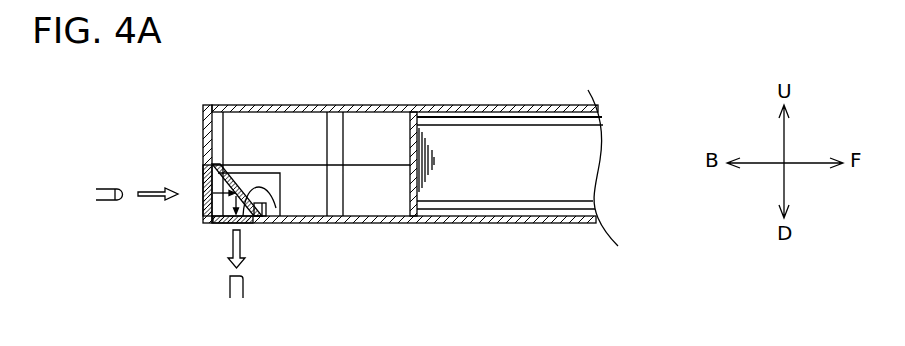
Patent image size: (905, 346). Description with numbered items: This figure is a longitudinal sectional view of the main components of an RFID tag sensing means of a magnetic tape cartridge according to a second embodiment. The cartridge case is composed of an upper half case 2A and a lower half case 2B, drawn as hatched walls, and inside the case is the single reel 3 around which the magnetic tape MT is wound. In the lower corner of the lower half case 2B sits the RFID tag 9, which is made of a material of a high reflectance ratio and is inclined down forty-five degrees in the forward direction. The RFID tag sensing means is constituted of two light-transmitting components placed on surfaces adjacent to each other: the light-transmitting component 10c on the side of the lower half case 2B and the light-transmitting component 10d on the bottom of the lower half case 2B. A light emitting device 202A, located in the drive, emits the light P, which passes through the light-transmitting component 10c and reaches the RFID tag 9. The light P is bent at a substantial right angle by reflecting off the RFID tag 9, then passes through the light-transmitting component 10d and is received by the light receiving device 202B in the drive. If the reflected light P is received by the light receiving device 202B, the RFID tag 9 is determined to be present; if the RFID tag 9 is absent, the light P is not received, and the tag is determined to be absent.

The upper half case 2A is at (525, 106).
The lower half case 2B is at (545, 224).
The single reel 3 is at (468, 123).
The magnetic tape MT is at (593, 137).
The RFID tag 9 is at (276, 208).
The light-transmitting component 10c is at (198, 195).
The light-transmitting component 10d is at (227, 223).
The light emitting device 202A is at (103, 187).
The light receiving device 202B is at (245, 288).
The light P is at (197, 216).